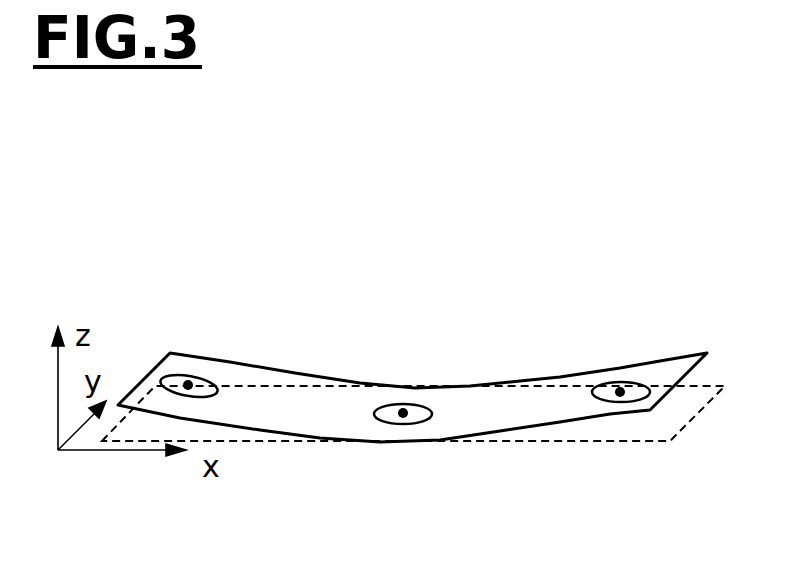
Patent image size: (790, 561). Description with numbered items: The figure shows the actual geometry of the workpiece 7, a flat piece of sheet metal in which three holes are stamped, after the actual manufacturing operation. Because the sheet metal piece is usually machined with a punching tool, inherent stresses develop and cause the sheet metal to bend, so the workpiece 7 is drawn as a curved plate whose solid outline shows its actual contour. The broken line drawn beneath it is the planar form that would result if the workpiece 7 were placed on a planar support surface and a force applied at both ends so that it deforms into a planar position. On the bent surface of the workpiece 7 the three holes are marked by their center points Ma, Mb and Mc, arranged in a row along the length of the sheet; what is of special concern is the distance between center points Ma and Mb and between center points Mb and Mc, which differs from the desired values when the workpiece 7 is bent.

The workpiece 7 is at (530, 415).
The center point of the first hole Ma is at (188, 381).
The center point of the second hole Mb is at (406, 412).
The center point of the third hole Mc is at (620, 387).